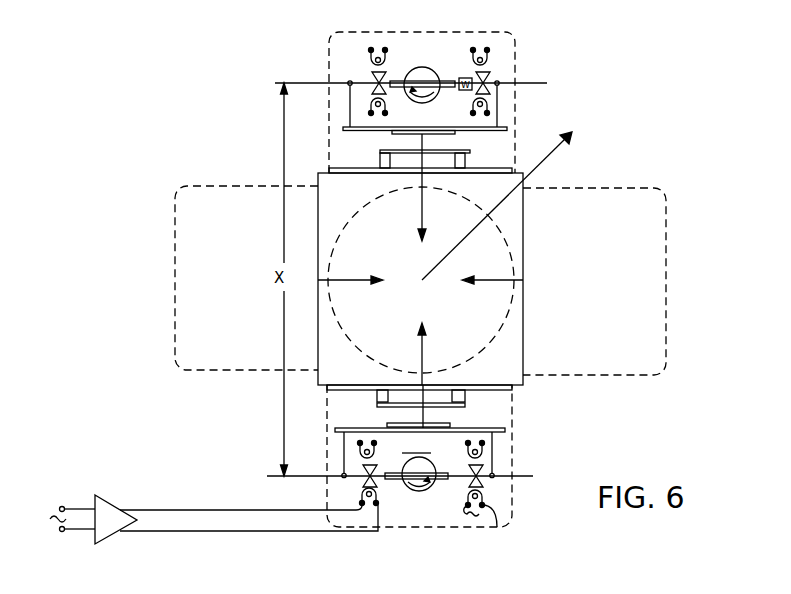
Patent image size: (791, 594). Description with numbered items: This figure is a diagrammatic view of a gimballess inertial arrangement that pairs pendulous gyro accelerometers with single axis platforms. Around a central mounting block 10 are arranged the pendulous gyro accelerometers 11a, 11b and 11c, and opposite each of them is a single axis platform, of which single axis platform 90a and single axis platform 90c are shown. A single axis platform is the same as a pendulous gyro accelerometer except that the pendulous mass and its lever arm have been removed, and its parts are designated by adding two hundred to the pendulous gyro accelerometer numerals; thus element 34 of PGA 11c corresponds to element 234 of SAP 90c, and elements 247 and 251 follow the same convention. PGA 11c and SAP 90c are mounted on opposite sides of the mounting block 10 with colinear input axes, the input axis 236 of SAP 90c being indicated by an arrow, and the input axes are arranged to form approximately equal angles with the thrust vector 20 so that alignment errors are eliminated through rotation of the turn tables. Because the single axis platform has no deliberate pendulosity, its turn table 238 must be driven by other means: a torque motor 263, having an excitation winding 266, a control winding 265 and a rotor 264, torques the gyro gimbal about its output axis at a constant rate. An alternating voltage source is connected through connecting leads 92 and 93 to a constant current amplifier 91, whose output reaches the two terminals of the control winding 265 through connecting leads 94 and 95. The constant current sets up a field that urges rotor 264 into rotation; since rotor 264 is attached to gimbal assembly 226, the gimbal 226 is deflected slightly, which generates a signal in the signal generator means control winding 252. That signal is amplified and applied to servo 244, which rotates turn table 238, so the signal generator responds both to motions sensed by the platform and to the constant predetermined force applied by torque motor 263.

The vehicle body 10 is at (321, 173).
The pendulous gyro accelerometer 11a is at (666, 246).
The pendulous gyro accelerometer 11b is at (485, 345).
The pendulous gyro accelerometer 11c is at (485, 32).
The thrust vector 20 is at (552, 152).
The drive motor 34 is at (423, 67).
The single axis platform 90a is at (244, 370).
The single axis platform 90c is at (404, 528).
The input axis 236 is at (424, 337).
The turn table 238 is at (452, 429).
The servo 244 is at (465, 394).
The torque motor 263 is at (420, 454).
The excitation winding 266 is at (357, 449).
The signal generator means control winding 252 is at (485, 447).
The rotor 264 is at (362, 486).
The valve 247 is at (484, 485).
The control winding 265 is at (378, 498).
The solenoid coil 251 is at (490, 510).
The gimbal assembly 226 is at (436, 484).
The drive shaft 234 is at (421, 492).
The constant current amplifier 91 is at (112, 497).
The connecting lead 92 is at (78, 509).
The connecting lead 93 is at (78, 529).
The connecting lead 94 is at (192, 510).
The connecting lead 95 is at (196, 531).